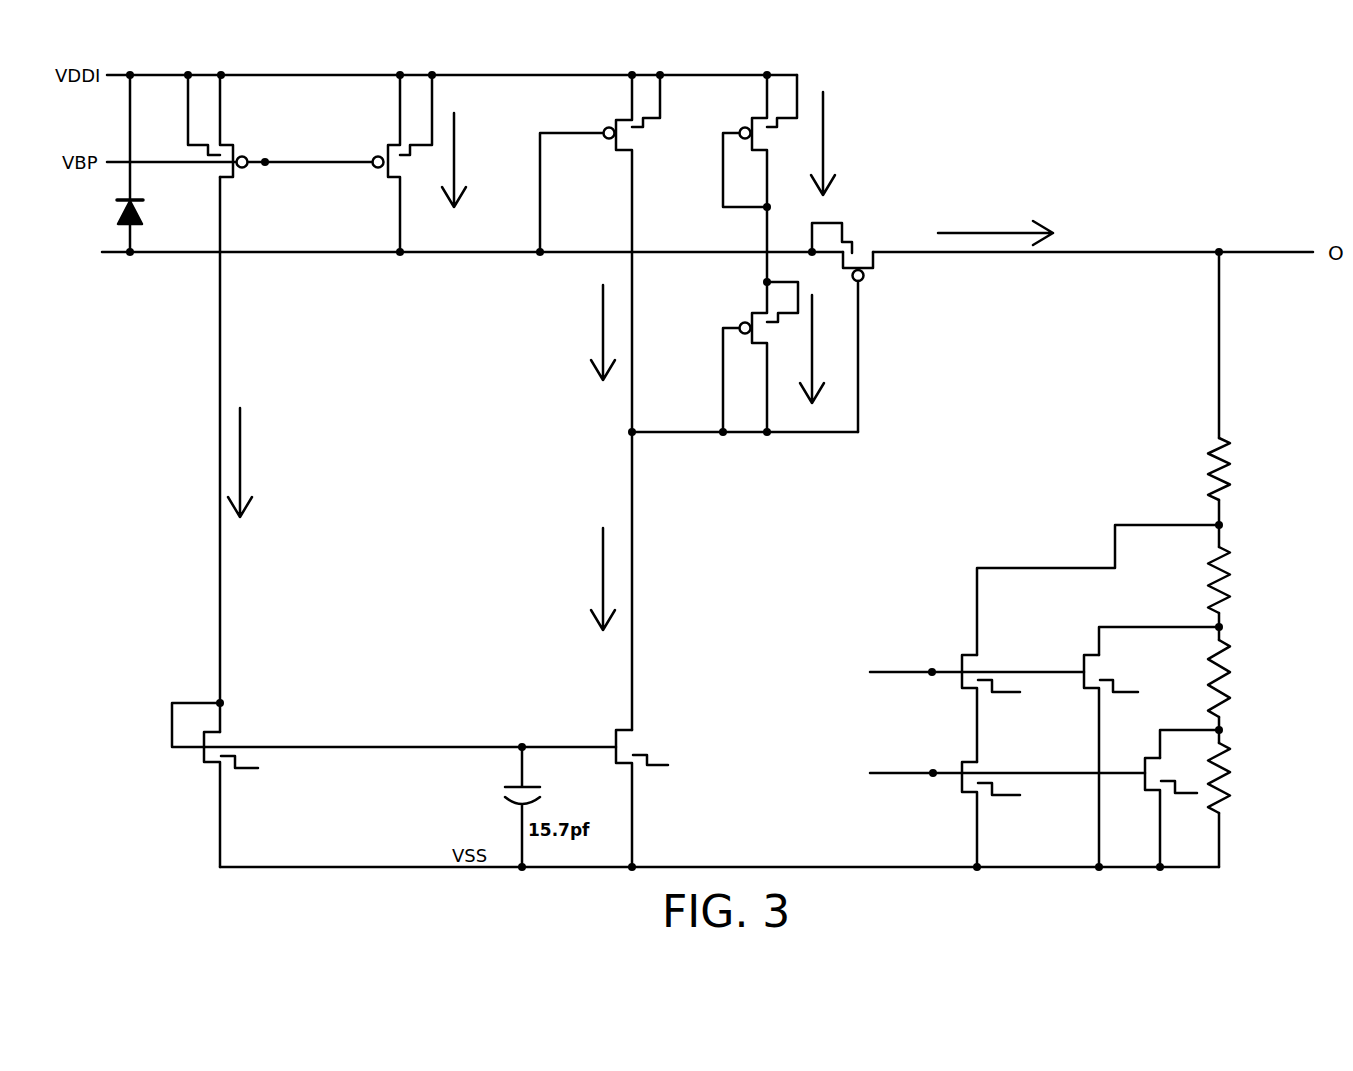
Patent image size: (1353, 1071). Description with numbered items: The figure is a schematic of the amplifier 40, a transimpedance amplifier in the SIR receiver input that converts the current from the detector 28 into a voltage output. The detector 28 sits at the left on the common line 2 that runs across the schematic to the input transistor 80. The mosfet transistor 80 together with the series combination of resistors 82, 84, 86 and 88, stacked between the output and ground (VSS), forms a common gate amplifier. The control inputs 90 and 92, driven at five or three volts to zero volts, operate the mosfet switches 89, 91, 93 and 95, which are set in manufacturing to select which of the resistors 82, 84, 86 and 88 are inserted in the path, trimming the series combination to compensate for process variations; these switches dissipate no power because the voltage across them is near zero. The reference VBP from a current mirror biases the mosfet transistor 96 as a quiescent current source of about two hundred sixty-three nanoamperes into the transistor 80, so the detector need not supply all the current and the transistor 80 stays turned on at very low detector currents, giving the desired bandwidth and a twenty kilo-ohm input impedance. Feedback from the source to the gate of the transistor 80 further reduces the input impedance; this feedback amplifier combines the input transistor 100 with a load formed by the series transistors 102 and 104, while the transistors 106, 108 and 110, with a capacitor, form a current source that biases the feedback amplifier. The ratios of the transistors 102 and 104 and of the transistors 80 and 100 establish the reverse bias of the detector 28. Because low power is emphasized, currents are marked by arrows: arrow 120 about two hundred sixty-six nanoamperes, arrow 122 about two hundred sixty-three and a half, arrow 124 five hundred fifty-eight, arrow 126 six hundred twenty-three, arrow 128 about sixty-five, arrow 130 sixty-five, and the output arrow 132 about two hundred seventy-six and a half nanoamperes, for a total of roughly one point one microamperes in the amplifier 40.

The output node line 2 is at (113, 256).
The detector 28 is at (143, 220).
The amplifier 40 is at (197, 401).
The mosfet transistor 80 is at (861, 250).
The resistor 82 is at (1222, 440).
The resistor 84 is at (1222, 548).
The resistor 86 is at (1222, 650).
The resistor 88 is at (1222, 752).
The mosfet switch 89 is at (968, 793).
The control input 90 is at (883, 777).
The mosfet switch 91 is at (1153, 790).
The control input 92 is at (902, 675).
The mosfet switch 93 is at (975, 690).
The mosfet switch 95 is at (1088, 664).
The mosfet transistor 96 is at (402, 165).
The input transistor 100 is at (622, 139).
The transistor 102 is at (770, 329).
The transistor 104 is at (778, 141).
The transistor 106 is at (625, 740).
The transistor 108 is at (210, 739).
The transistor 110 is at (232, 145).
The arrow 120 is at (242, 455).
The arrow 122 is at (457, 160).
The arrow 124 is at (602, 305).
The arrow 126 is at (602, 572).
The arrow 128 is at (826, 147).
The arrow 130 is at (813, 357).
The arrow 132 is at (996, 233).